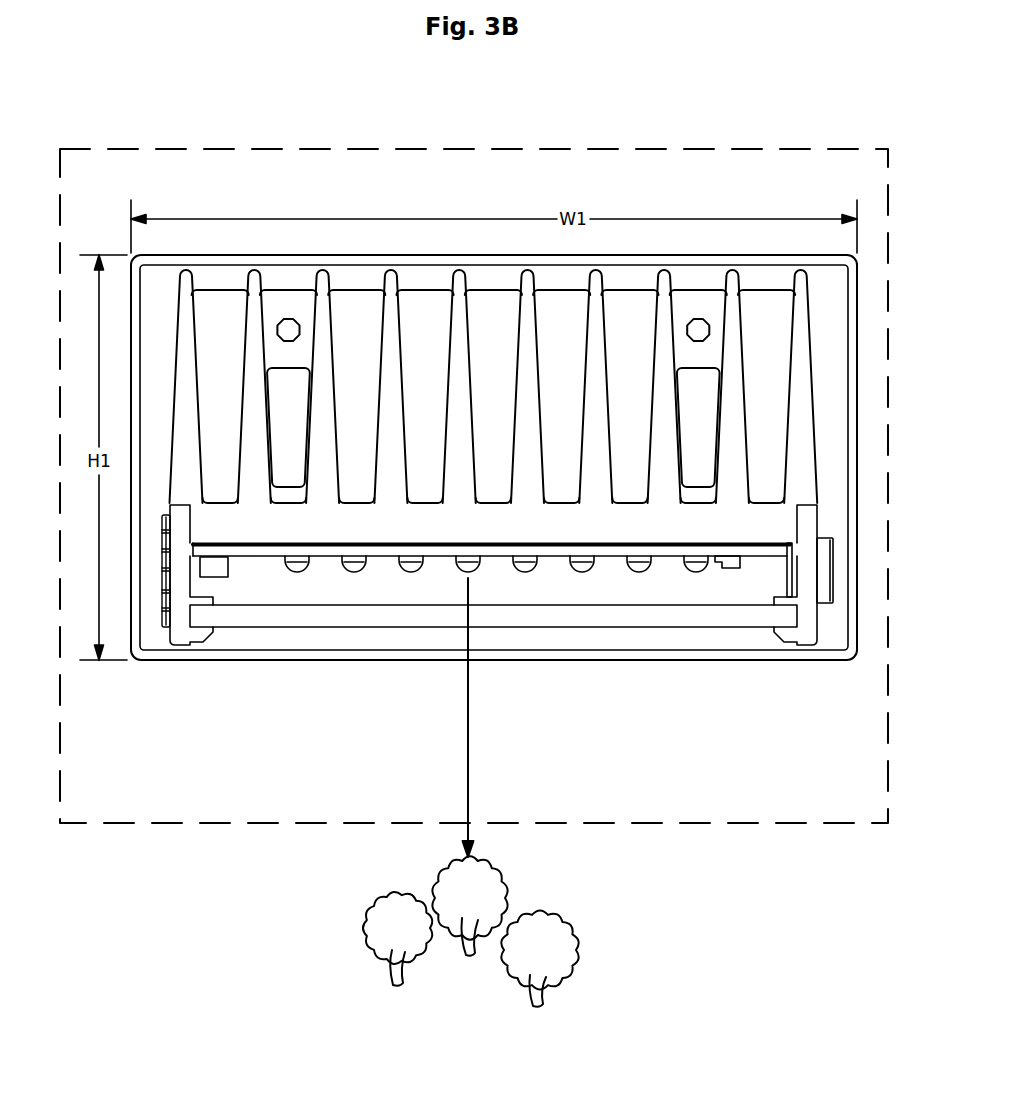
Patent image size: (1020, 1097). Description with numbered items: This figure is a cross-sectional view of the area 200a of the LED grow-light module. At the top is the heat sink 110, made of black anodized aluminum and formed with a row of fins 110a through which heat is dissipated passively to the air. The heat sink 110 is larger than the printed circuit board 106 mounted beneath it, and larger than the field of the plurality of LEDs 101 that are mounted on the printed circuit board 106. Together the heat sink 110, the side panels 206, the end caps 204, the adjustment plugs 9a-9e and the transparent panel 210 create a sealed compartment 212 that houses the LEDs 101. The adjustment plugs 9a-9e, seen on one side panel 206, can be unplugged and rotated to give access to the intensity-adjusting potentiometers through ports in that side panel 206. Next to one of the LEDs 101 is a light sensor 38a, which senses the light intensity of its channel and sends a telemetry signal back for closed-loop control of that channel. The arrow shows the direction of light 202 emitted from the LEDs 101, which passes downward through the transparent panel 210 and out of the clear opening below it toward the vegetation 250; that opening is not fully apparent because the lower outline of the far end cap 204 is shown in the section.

The cross-sectional view area 200a is at (588, 148).
The end cap 204 is at (155, 278).
The fin 110a is at (525, 387).
The heat sink 110 is at (253, 520).
The printed circuit board 106 is at (325, 548).
The sealed compartment 212 is at (629, 583).
The LED 101 is at (583, 568).
The light sensor 38a is at (728, 568).
The transparent panel 210 is at (657, 616).
The side panel 206 is at (183, 637).
The adjustment hole plugs 9a-9e is at (162, 628).
The direction of light 202 is at (468, 685).
The vegetation 250 is at (517, 983).